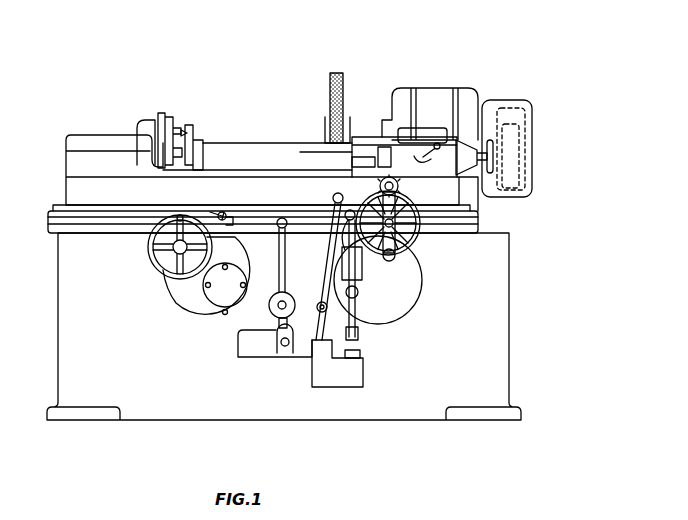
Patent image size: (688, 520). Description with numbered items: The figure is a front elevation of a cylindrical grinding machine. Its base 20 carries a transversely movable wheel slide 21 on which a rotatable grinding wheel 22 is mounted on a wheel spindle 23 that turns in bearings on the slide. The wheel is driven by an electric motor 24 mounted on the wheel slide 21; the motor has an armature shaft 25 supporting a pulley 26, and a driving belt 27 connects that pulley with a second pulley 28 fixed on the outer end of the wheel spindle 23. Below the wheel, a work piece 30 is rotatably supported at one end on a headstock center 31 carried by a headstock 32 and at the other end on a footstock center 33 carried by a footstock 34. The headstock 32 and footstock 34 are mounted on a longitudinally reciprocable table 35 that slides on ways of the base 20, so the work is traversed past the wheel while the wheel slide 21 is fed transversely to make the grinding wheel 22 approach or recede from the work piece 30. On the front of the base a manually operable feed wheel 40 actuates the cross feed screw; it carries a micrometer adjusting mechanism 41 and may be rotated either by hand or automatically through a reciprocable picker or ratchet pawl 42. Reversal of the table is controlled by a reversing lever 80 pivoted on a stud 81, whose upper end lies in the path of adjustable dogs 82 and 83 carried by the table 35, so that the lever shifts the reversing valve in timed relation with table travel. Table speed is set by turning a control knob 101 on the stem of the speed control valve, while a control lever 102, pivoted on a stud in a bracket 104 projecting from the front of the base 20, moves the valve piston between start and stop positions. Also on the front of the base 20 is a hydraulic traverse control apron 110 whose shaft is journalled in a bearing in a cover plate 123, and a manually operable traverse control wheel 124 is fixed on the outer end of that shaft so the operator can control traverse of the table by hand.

The base 20 is at (504, 349).
The wheel slide 21 is at (407, 133).
The grinding wheel 22 is at (345, 74).
The wheel spindle 23 is at (365, 143).
The electric motor 24 is at (444, 90).
The armature shaft 25 is at (489, 121).
The pulley 26 is at (527, 106).
The driving belt 27 is at (517, 196).
The pulley 28 is at (524, 177).
The work piece 30 is at (248, 144).
The headstock center 31 is at (178, 151).
The headstock 32 is at (152, 119).
The footstock center 33 is at (352, 158).
The footstock 34 is at (421, 149).
The table 35 is at (57, 206).
The feed wheel 40 is at (422, 243).
The micrometer adjusting mechanism 41 is at (407, 190).
The ratchet pawl 42 is at (358, 262).
The reversing lever 80 is at (322, 313).
The stud 81 is at (321, 302).
The adjustable dog 82 is at (228, 213).
The adjustable dog 83 is at (348, 212).
The control knob 101 is at (279, 307).
The control lever 102 is at (288, 259).
The bracket 104 is at (283, 350).
The hydraulic traverse control apron 110 is at (178, 304).
The cover plate 123 is at (214, 323).
The traverse control wheel 124 is at (150, 256).